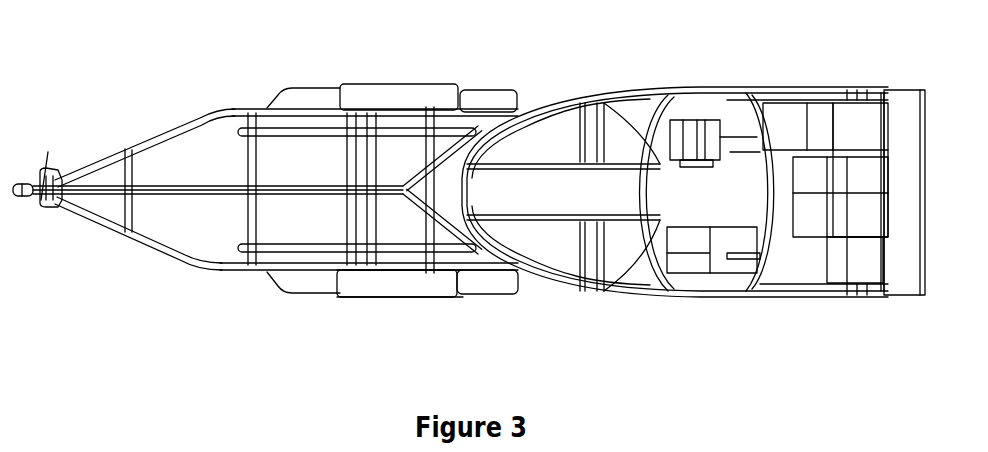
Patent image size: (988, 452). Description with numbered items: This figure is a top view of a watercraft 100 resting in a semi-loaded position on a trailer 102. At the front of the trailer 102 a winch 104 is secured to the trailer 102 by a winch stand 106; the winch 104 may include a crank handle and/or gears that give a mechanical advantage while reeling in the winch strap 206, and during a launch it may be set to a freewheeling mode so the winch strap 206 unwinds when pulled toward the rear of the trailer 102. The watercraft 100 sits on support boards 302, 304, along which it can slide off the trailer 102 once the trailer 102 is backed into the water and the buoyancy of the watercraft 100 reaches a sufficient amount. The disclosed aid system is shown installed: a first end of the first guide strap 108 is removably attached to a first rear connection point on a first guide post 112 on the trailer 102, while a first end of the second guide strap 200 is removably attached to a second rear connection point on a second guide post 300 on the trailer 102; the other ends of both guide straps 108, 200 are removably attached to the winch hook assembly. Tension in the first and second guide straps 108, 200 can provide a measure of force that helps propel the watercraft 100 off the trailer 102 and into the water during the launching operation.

The watercraft 100 is at (683, 297).
The trailer 102 is at (167, 253).
The winch 104 is at (40, 193).
The winch stand 106 is at (65, 180).
The first guide strap 108 is at (463, 272).
The first guide post 112 is at (457, 233).
The second guide strap 200 is at (475, 106).
The winch strap 206 is at (183, 185).
The second guide post 300 is at (445, 150).
The support board 302 is at (307, 252).
The support board 304 is at (318, 130).